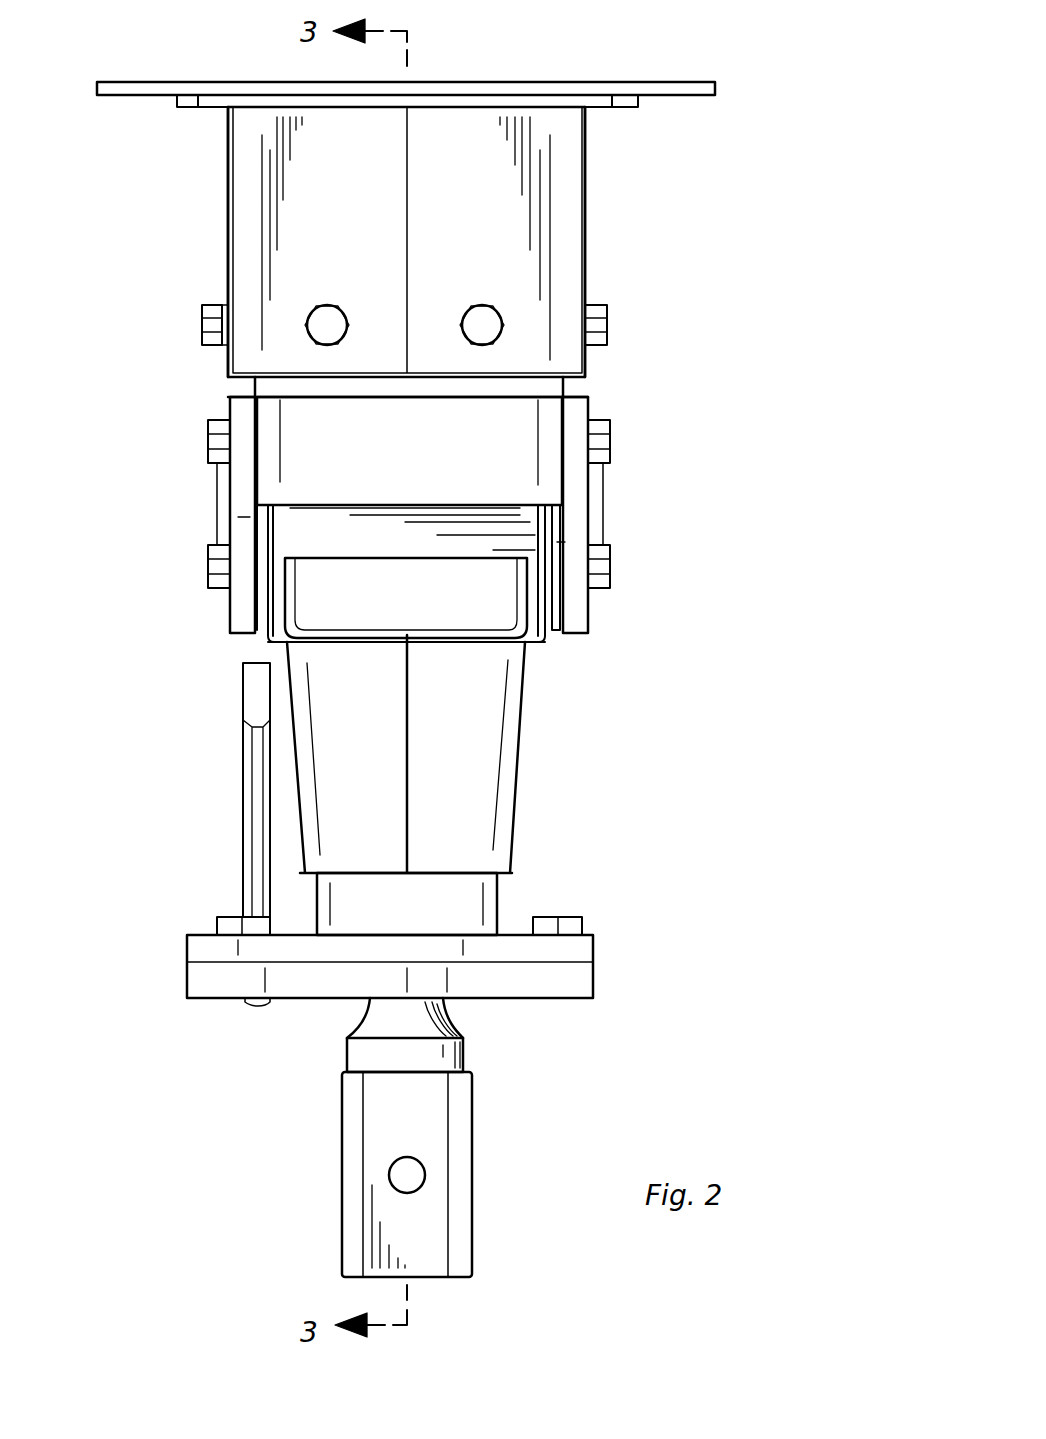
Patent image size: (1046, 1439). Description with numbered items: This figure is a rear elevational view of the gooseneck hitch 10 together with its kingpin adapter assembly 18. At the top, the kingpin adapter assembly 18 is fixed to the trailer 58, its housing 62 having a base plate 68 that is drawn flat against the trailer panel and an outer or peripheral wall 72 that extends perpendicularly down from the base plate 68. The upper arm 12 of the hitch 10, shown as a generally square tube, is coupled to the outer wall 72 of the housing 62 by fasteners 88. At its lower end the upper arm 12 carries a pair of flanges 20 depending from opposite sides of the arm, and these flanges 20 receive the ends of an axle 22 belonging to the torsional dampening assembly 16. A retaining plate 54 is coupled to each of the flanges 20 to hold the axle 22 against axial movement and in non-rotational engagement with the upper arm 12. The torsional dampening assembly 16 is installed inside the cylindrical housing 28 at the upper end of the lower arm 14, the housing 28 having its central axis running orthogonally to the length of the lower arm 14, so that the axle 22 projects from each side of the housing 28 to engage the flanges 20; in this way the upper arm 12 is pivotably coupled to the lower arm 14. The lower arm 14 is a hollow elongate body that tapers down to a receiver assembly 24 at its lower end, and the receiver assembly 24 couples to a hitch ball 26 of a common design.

The gooseneck hitch 10 is at (824, 279).
The upper arm 12 is at (528, 402).
The lower arm 14 is at (518, 797).
The torsional dampening assembly 16 is at (369, 552).
The kingpin adapter assembly 18 is at (606, 182).
The flanges 20 is at (262, 547).
The axle 22 is at (550, 575).
The receiver assembly 24 is at (652, 949).
The hitch ball 26 is at (465, 1058).
The cylindrical housing 28 is at (522, 518).
The retaining plate 54 is at (231, 620).
The trailer 58 is at (695, 81).
The housing 62 is at (585, 240).
The base plate 68 is at (178, 107).
The outer wall 72 is at (228, 189).
The fasteners 88 is at (205, 325).